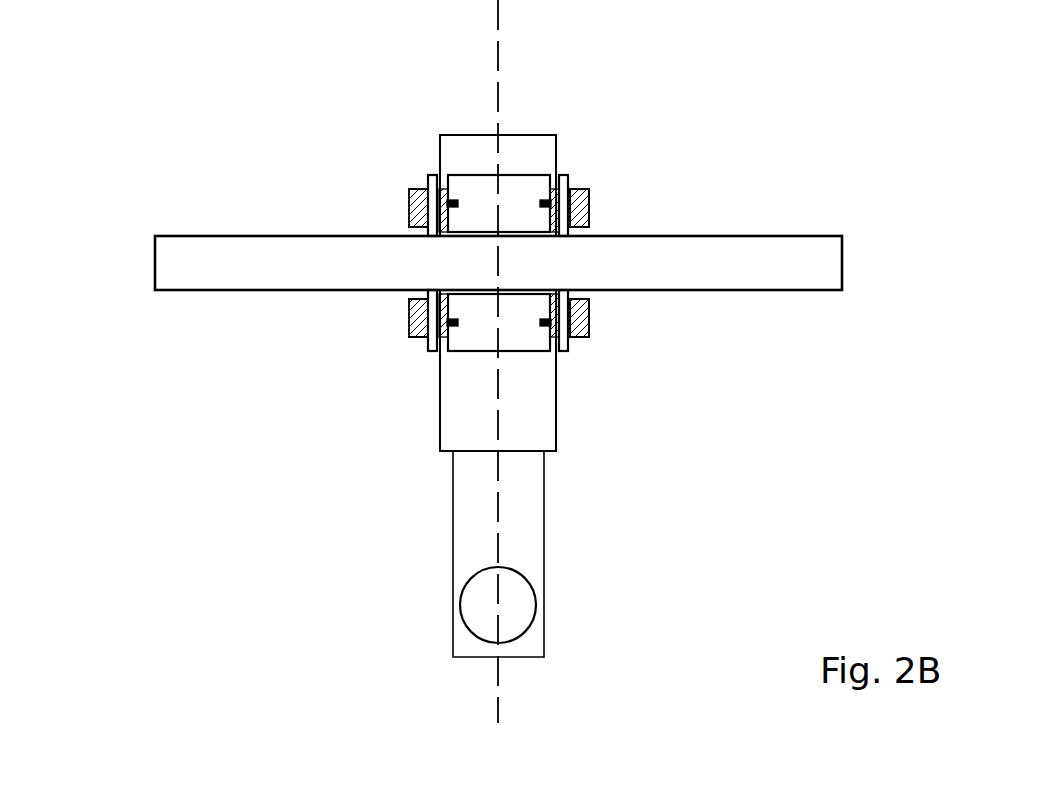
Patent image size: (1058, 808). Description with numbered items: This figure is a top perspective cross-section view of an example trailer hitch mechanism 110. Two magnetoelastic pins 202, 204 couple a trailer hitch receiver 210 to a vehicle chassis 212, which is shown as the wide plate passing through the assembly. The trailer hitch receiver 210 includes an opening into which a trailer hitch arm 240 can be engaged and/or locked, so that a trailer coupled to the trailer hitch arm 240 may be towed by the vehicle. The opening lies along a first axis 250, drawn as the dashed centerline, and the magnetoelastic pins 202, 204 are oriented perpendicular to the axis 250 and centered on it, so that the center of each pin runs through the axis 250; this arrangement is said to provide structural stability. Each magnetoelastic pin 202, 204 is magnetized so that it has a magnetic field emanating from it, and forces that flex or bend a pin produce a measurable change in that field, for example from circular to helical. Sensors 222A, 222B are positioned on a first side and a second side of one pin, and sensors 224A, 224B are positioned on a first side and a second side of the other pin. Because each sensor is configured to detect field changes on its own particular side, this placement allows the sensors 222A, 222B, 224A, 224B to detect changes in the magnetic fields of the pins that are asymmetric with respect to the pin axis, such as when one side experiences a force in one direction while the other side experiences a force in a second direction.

The trailer hitch mechanism 110 is at (145, 122).
The magnetoelastic pin 202 is at (409, 192).
The magnetoelastic pin 204 is at (408, 305).
The trailer hitch receiver 210 is at (440, 395).
The vehicle chassis 212 is at (318, 236).
The sensor 222A is at (452, 204).
The sensor 222B is at (542, 204).
The sensor 224A is at (453, 322).
The sensor 224B is at (548, 322).
The trailer hitch arm 240 is at (530, 533).
The first axis 250 is at (497, 714).